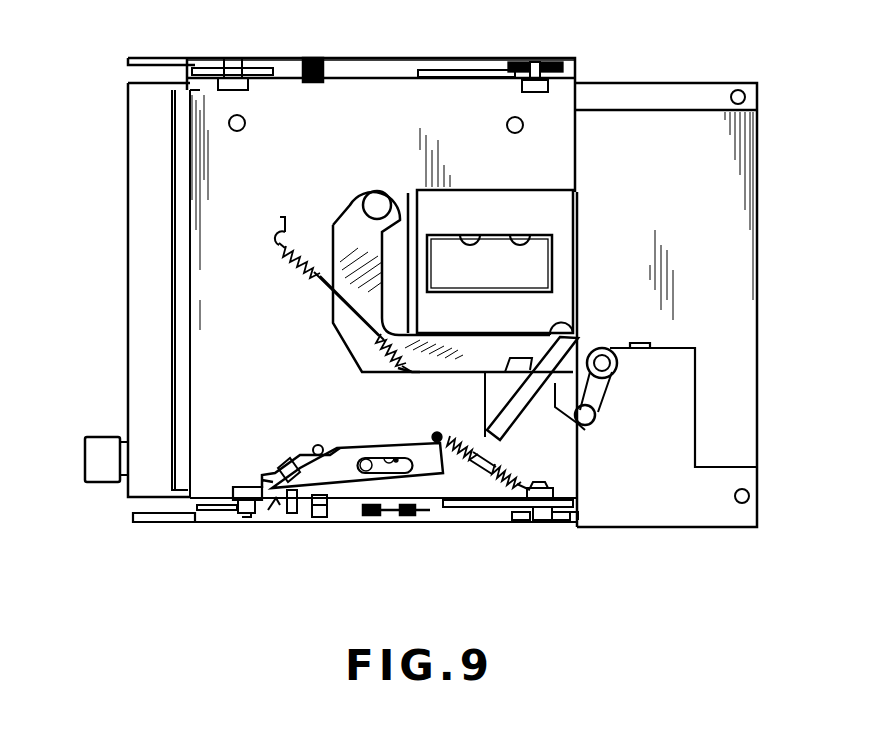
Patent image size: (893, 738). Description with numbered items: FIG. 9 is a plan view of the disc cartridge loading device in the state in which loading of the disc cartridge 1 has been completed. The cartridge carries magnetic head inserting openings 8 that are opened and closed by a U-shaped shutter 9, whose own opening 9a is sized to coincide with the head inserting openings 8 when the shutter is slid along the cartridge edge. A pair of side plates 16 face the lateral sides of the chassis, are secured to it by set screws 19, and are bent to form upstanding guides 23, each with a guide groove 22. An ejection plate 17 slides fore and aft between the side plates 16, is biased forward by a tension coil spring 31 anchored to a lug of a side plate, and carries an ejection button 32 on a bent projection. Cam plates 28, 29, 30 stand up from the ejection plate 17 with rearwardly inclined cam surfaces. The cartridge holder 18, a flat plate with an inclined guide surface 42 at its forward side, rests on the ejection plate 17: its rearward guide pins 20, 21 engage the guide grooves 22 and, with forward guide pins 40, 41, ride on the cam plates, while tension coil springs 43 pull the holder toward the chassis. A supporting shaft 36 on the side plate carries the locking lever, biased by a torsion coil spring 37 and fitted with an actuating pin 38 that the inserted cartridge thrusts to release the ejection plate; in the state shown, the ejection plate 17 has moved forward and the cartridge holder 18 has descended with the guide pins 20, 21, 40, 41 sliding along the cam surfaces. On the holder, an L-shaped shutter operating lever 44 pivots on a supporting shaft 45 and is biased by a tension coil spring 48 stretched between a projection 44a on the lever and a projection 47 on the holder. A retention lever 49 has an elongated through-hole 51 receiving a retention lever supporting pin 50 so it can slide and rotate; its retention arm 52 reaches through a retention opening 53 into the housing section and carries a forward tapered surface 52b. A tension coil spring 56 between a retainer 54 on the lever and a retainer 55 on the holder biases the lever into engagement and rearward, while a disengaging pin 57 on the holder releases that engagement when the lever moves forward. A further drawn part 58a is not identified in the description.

The disc cartridge 1 is at (142, 122).
The magnetic head inserting openings 8 is at (528, 235).
The shutter 9 is at (557, 213).
The opening 9a is at (478, 235).
The side plates 16 is at (205, 60).
The ejection plate 17 is at (475, 510).
The cartridge holder 18 is at (373, 83).
The set screws 19 is at (738, 90).
The guide pin 20 is at (535, 62).
The guide pin 21 is at (540, 520).
The guide groove 22 is at (520, 62).
The guides 23 is at (560, 62).
The cam plate 28 is at (455, 70).
The cam plate 29 is at (220, 512).
The cam plate 30 is at (520, 520).
The tension coil spring 31 is at (430, 515).
The ejection button 32 is at (98, 455).
The supporting shaft 36 is at (605, 348).
The torsion coil spring 37 is at (615, 375).
The actuating pin 38 is at (600, 418).
The guide pin 40 is at (235, 58).
The guide pin 41 is at (247, 517).
The inclined guide surface 42 is at (182, 225).
The tension coil springs 43 is at (320, 58).
The shutter operating lever 44 is at (345, 235).
The projection 44a is at (412, 375).
The supporting shaft 45 is at (377, 205).
The projection 47 is at (278, 225).
The tension coil spring 48 is at (307, 280).
The retention lever 49 is at (337, 448).
The retention lever supporting pin 50 is at (366, 458).
The elongated through-hole 51 is at (396, 458).
The retention arm 52 is at (295, 512).
The tapered surface 52b is at (278, 512).
The retention opening 53 is at (270, 475).
The retainer 54 is at (455, 440).
The retainer 55 is at (553, 490).
The tension coil spring 56 is at (520, 472).
The disengaging pin 57 is at (316, 445).
The pin 58a is at (288, 462).